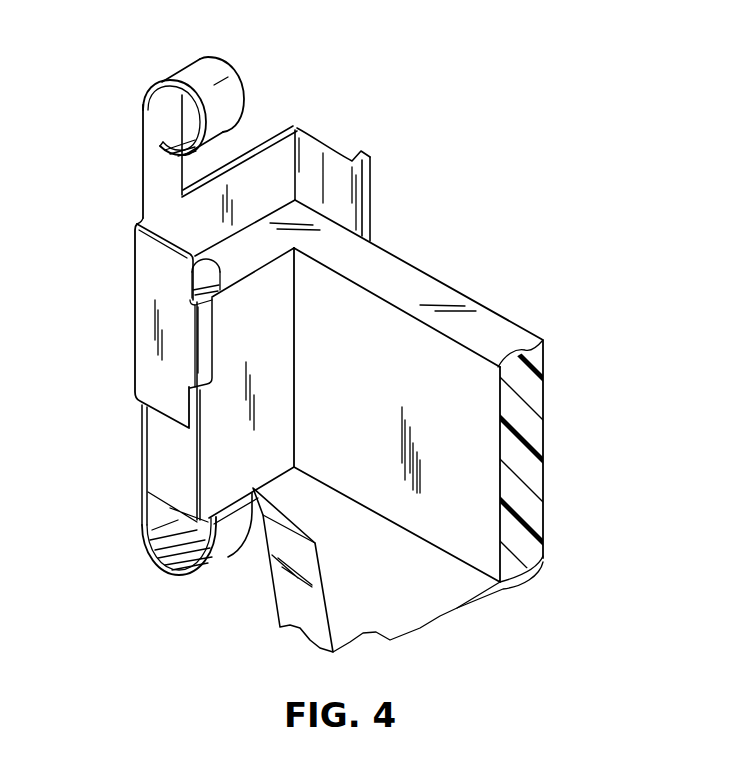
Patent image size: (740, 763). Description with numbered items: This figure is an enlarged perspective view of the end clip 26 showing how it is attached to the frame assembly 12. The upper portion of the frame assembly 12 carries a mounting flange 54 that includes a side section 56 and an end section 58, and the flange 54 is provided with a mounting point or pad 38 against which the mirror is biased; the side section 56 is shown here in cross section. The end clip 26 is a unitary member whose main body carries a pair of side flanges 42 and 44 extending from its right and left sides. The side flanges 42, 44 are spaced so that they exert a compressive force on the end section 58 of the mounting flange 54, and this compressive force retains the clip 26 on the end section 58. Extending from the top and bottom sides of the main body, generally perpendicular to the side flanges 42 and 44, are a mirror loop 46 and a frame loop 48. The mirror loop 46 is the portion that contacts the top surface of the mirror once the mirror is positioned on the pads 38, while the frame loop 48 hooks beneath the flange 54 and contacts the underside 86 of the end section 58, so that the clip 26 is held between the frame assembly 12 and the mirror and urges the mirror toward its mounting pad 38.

The frame assembly 12 is at (490, 299).
The end clip 26 is at (128, 148).
The mounting point or pad 38 is at (222, 277).
The side flange 42 is at (135, 309).
The side flange 44 is at (337, 148).
The mirror loop 46 is at (227, 70).
The frame loop 48 is at (155, 553).
The mounting flange 54 is at (447, 335).
The side section 56 is at (546, 480).
The end section 58 is at (277, 478).
The underside 86 is at (183, 518).